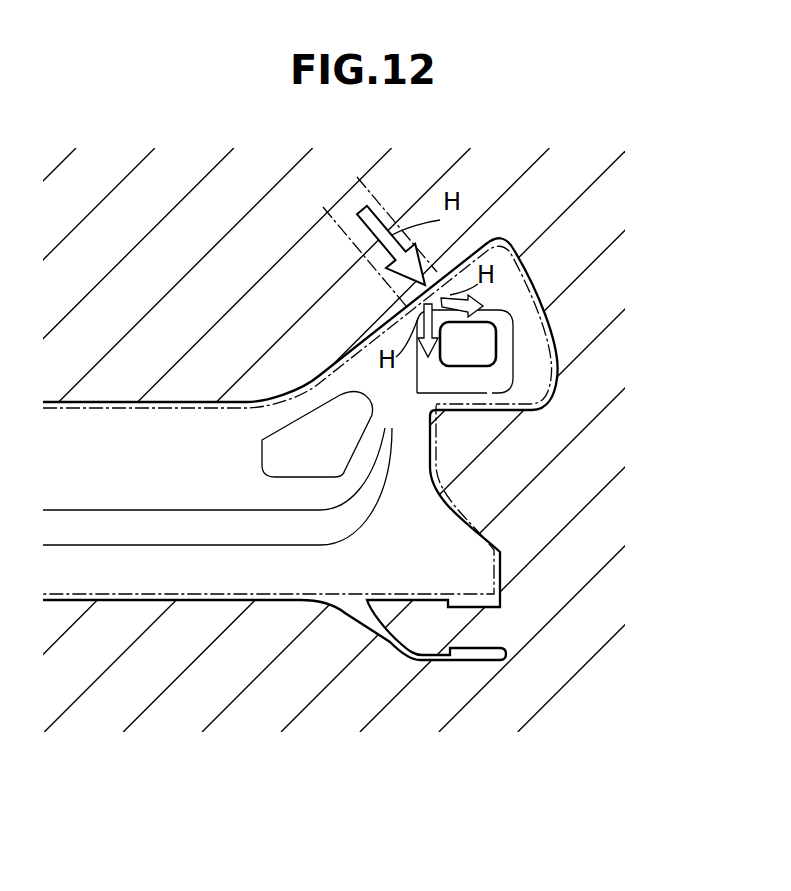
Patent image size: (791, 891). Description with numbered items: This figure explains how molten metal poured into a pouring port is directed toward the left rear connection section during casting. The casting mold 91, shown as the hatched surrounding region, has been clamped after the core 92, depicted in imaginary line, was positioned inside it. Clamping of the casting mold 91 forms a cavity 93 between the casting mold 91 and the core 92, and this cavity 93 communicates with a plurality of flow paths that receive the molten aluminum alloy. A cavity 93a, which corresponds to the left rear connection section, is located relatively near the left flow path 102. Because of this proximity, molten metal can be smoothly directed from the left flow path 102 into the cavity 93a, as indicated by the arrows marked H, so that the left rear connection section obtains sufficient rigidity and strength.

The casting mold 91 is at (565, 177).
The core 92 is at (527, 273).
The cavity 93 is at (226, 497).
The cavity corresponding to the left rear connection section 93a is at (500, 328).
The left flow path 102 is at (378, 258).